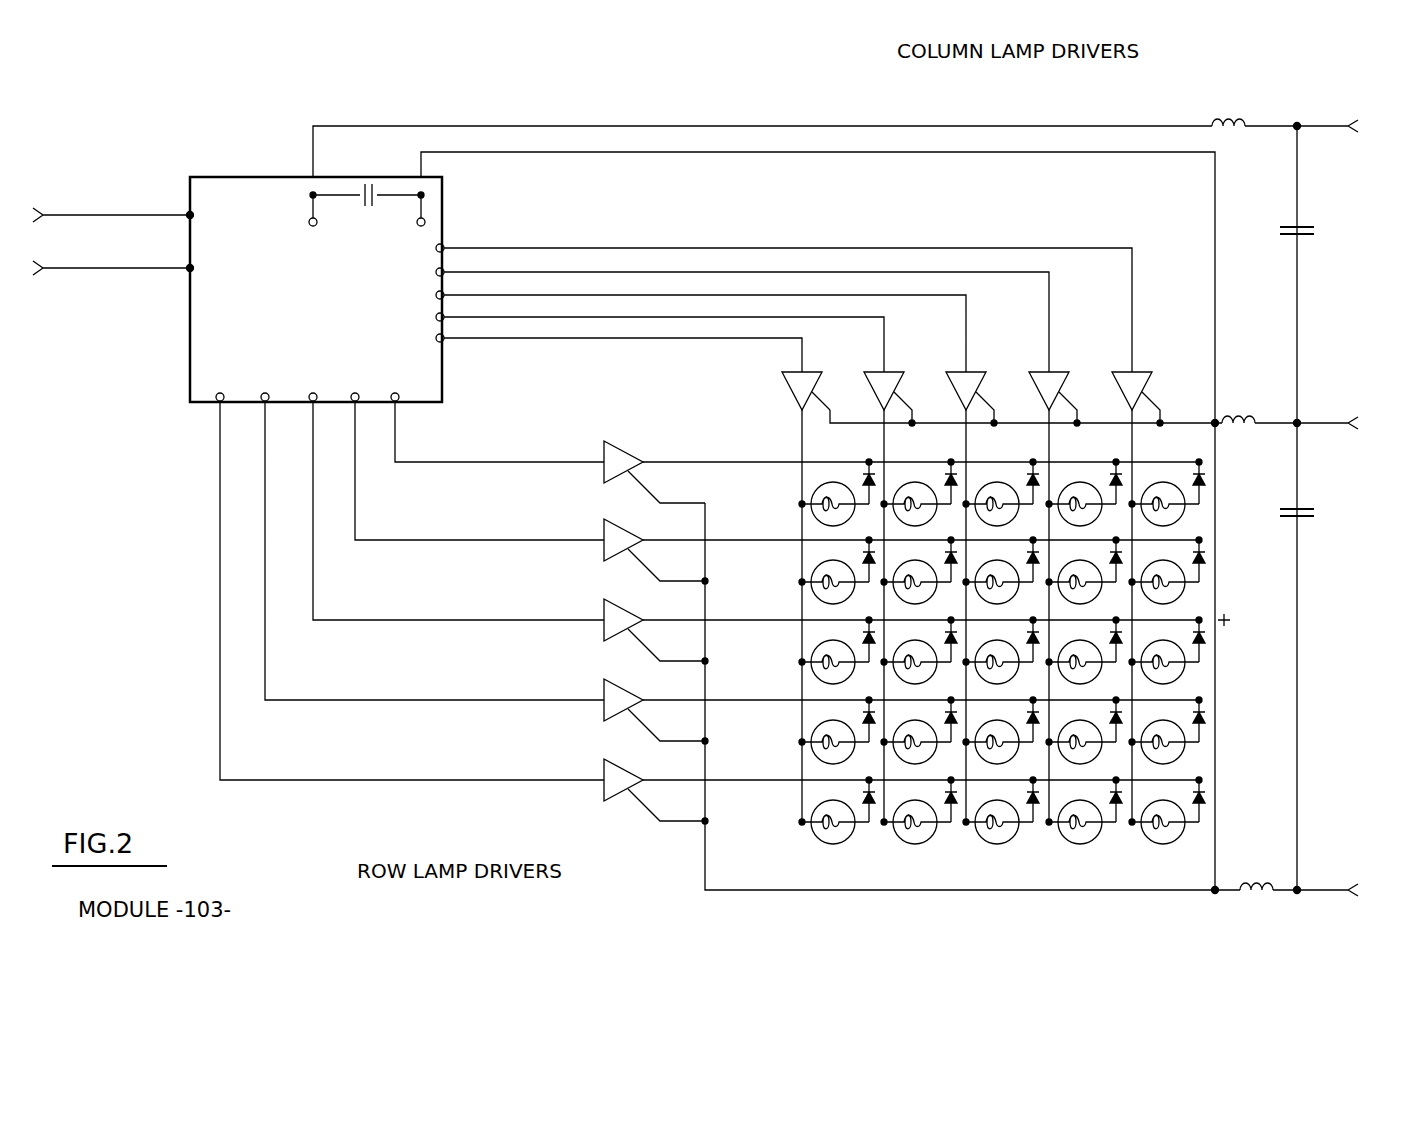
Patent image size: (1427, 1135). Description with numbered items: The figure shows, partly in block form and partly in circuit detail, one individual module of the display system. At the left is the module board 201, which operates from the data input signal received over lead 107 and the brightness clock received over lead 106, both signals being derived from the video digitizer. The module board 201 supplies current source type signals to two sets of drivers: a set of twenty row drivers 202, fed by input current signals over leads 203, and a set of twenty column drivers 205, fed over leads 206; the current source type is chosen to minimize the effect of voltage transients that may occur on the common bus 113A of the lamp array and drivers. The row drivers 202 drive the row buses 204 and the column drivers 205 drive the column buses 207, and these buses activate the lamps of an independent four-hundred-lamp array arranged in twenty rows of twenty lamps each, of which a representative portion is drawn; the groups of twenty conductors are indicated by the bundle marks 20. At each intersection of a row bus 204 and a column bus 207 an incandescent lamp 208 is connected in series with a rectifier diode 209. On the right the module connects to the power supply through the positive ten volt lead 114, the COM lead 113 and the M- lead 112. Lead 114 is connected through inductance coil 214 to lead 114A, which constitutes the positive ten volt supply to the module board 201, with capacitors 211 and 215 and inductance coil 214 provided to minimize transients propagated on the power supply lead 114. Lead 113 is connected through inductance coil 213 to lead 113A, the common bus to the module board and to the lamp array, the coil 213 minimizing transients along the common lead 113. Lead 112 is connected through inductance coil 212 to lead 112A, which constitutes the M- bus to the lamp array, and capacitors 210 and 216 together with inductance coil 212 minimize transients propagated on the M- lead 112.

The wire bundle (20 conductors) 20 is at (545, 362).
The brightness clock lead 106 is at (134, 266).
The data input lead 107 is at (124, 214).
The M- lead 112 is at (1298, 888).
The M- bus 112A is at (1220, 888).
The common lead 113 is at (1297, 420).
The common bus 113A is at (1217, 422).
The +10 V power supply lead 114 is at (1297, 135).
The +10 volt supply lead 114A is at (790, 125).
The module board 201 is at (190, 352).
The row drivers 202 is at (604, 440).
The leads 203 is at (193, 563).
The row buses 204 is at (702, 462).
The column drivers 205 is at (982, 364).
The leads 206 is at (600, 205).
The column buses 207 is at (1135, 445).
The incandescent lamp 208 is at (818, 522).
The rectifier diode 209 is at (1032, 472).
The capacitor 210 is at (1218, 636).
The capacitor 211 is at (376, 185).
The inductance coil 212 is at (1256, 892).
The inductance coil 213 is at (1240, 430).
The inductance coil 214 is at (1222, 120).
The capacitor 215 is at (1300, 225).
The capacitor 216 is at (1316, 512).